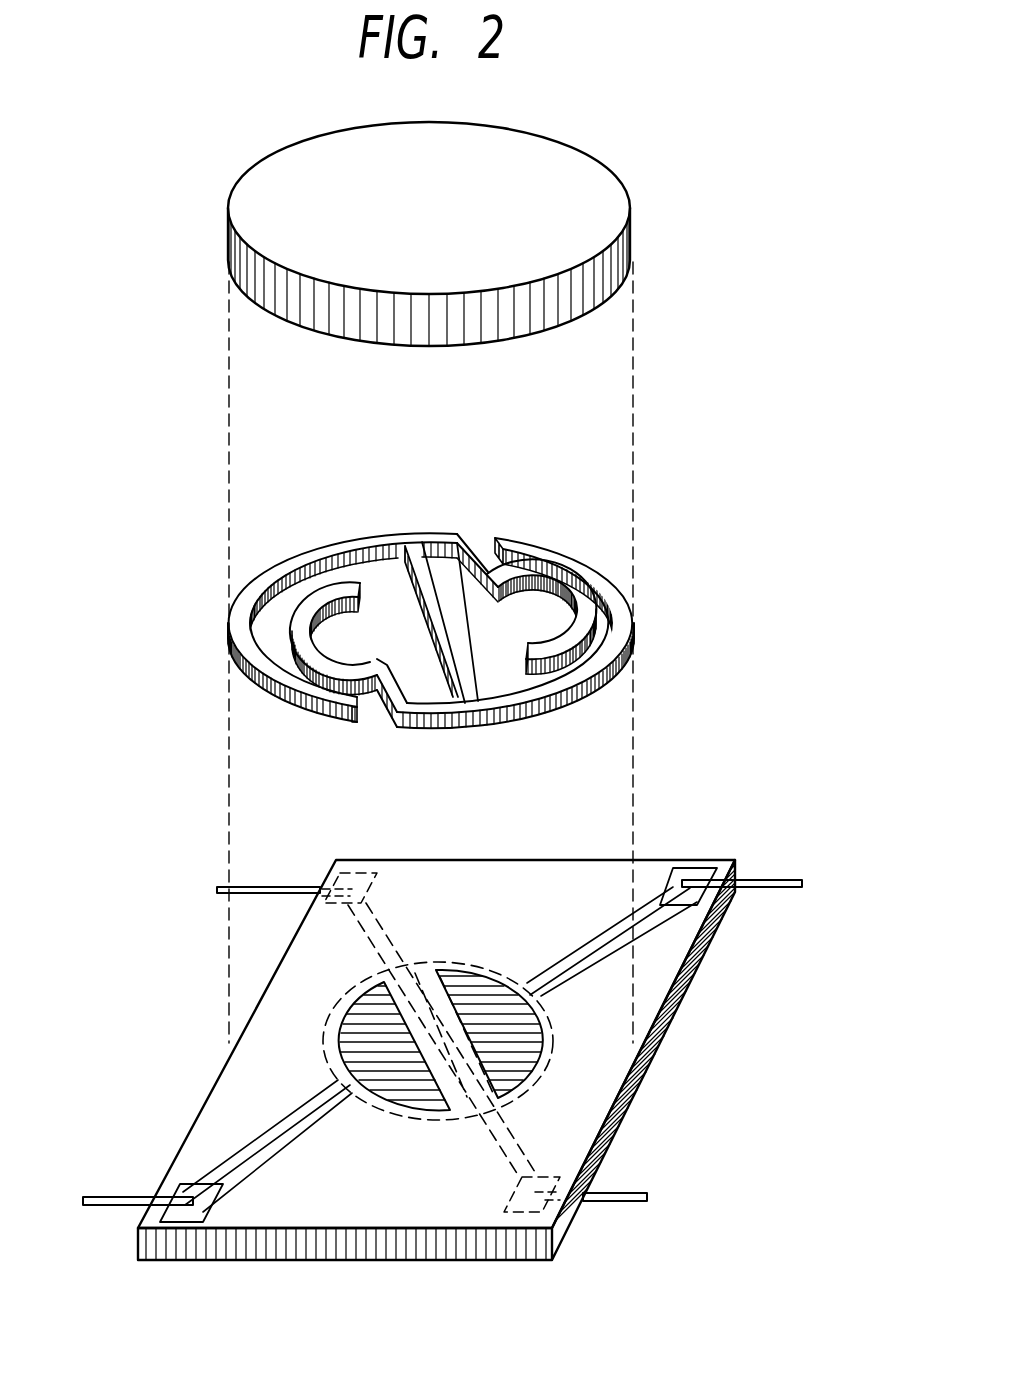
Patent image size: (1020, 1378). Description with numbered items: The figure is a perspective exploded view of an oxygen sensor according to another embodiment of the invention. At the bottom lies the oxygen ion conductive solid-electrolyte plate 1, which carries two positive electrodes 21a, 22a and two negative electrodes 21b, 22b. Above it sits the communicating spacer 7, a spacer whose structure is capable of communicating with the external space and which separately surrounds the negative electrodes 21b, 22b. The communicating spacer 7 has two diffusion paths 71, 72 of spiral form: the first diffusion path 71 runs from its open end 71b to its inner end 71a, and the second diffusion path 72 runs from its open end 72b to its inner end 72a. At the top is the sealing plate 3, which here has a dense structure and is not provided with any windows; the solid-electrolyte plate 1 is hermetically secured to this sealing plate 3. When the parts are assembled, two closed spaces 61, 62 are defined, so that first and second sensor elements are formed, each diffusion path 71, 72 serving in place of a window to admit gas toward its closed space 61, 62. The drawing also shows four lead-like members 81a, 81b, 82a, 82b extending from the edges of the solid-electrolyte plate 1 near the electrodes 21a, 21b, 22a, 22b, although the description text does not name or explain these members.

The oxygen ion conductive solid-electrolyte plate 1 is at (430, 1262).
The sealing plate 3 is at (630, 247).
The communicating spacer 7 is at (232, 657).
The diffusion path 71 is at (323, 583).
The inner end 71a is at (357, 580).
The open end 71b is at (370, 713).
The diffusion path 72 is at (562, 573).
The inner end 72a is at (537, 678).
The open end 72b is at (483, 537).
The closed space 61 is at (357, 637).
The closed space 62 is at (475, 605).
The positive electrode 21a is at (380, 1117).
The negative electrode 21b is at (360, 1040).
The positive electrode 22a is at (547, 1047).
The negative electrode 22b is at (507, 990).
The lead terminal 81a is at (217, 888).
The lead terminal 81b is at (93, 1207).
The lead terminal 82a is at (633, 1210).
The lead terminal 82b is at (802, 882).